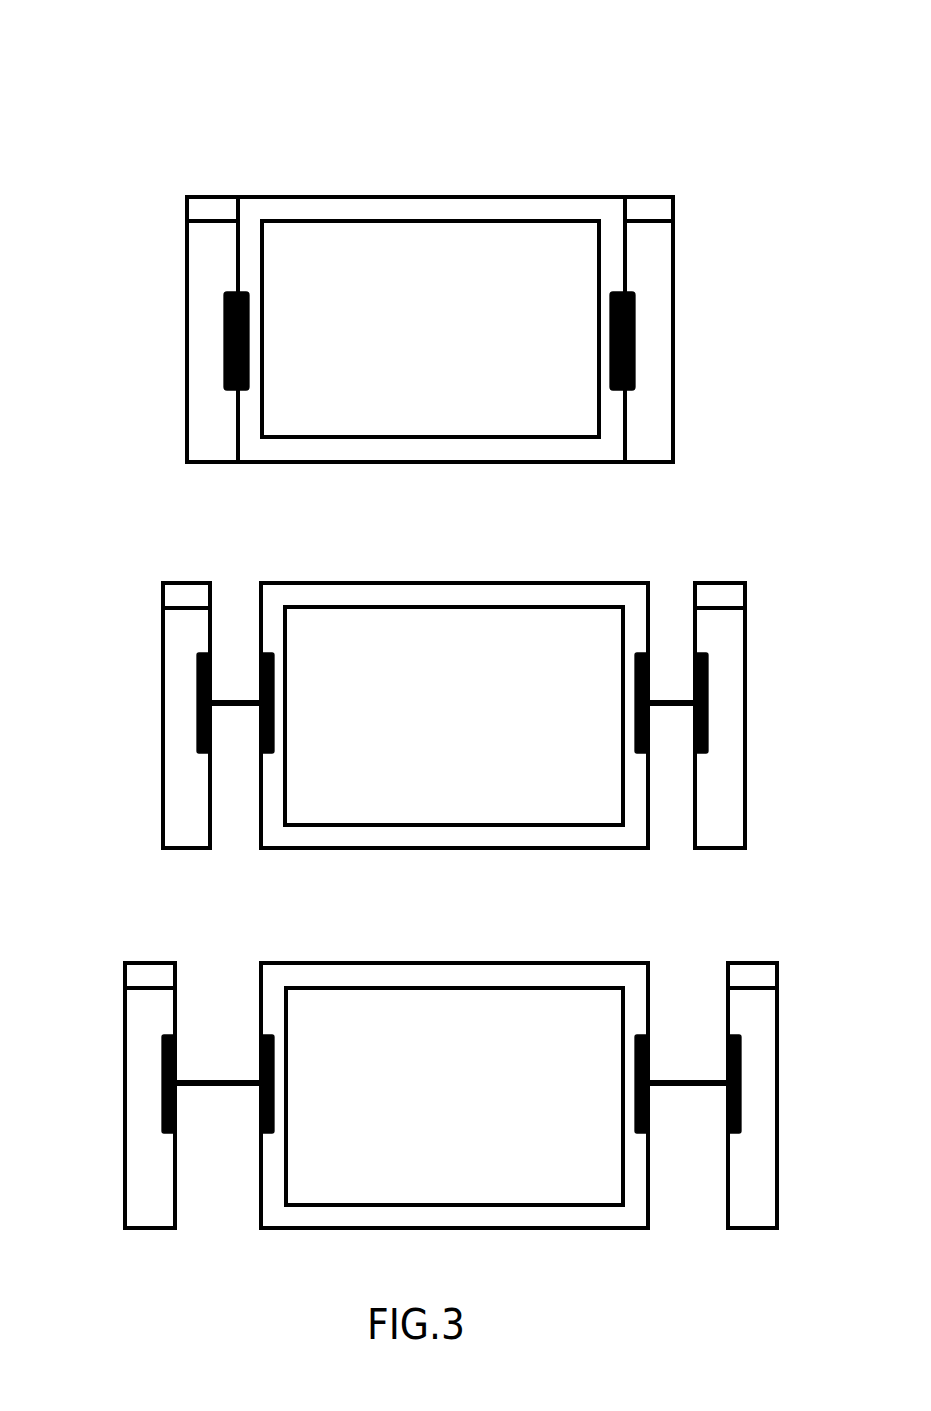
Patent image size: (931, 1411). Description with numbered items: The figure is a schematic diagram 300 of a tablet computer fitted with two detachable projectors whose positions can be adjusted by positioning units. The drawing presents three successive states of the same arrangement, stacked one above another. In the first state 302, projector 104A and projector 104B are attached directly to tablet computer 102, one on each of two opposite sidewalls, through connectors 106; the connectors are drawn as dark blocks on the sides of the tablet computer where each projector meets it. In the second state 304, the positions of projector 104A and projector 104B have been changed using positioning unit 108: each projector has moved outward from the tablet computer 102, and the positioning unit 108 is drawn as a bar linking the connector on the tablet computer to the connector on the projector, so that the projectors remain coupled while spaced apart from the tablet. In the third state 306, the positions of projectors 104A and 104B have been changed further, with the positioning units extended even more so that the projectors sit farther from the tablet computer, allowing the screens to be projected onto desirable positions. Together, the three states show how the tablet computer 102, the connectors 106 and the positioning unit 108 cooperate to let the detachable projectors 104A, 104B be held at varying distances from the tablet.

The schematic diagram of tablet computer with projectors 300 is at (720, 96).
The attached configuration 302 is at (471, 289).
The changed-position configuration 304 is at (493, 676).
The further-changed-position configuration 306 is at (482, 1080).
The tablet computer 102 is at (455, 197).
The projector 104A is at (210, 197).
The projector 104B is at (663, 197).
The connector 106 is at (188, 897).
The positioning unit 108 is at (672, 703).